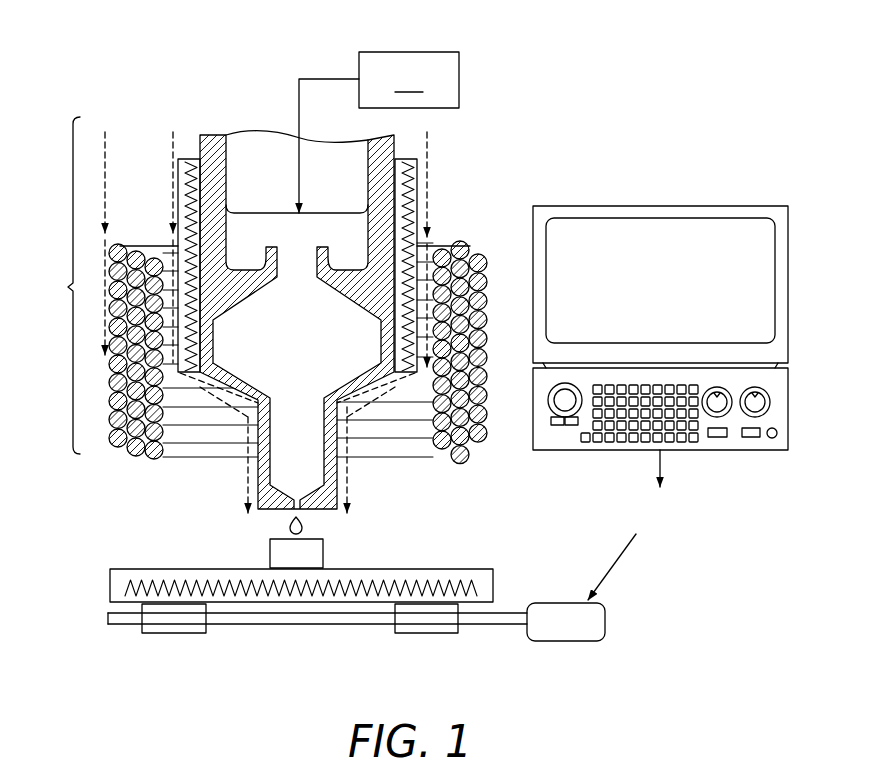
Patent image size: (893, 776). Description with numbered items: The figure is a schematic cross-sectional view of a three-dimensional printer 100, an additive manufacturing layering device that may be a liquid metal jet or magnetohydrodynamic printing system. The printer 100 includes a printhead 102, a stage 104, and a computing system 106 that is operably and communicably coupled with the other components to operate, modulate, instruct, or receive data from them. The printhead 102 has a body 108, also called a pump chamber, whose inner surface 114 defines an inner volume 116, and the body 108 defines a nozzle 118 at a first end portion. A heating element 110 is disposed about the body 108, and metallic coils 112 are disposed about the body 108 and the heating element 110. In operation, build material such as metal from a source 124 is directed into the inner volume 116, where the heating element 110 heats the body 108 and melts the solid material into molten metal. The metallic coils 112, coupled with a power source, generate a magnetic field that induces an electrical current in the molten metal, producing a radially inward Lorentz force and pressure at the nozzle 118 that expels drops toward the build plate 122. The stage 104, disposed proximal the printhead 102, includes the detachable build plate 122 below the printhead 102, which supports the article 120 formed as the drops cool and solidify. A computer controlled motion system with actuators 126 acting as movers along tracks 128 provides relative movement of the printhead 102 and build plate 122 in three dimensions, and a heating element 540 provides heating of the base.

The 3D printer 100 is at (138, 83).
The printhead 102 is at (56, 285).
The stage 104 is at (106, 618).
The computing system 106 is at (645, 205).
The body 108 is at (213, 131).
The heating element 110 is at (190, 158).
The metallic coils 112 is at (461, 241).
The inner surface 114 is at (368, 171).
The inner volume 116 is at (284, 343).
The nozzle 118 is at (340, 480).
The article 120 is at (324, 553).
The build plate 122 is at (192, 565).
The source 124 is at (379, 132).
The actuators 126 is at (172, 635).
The tracks 128 is at (288, 626).
The heating element 540 is at (474, 585).